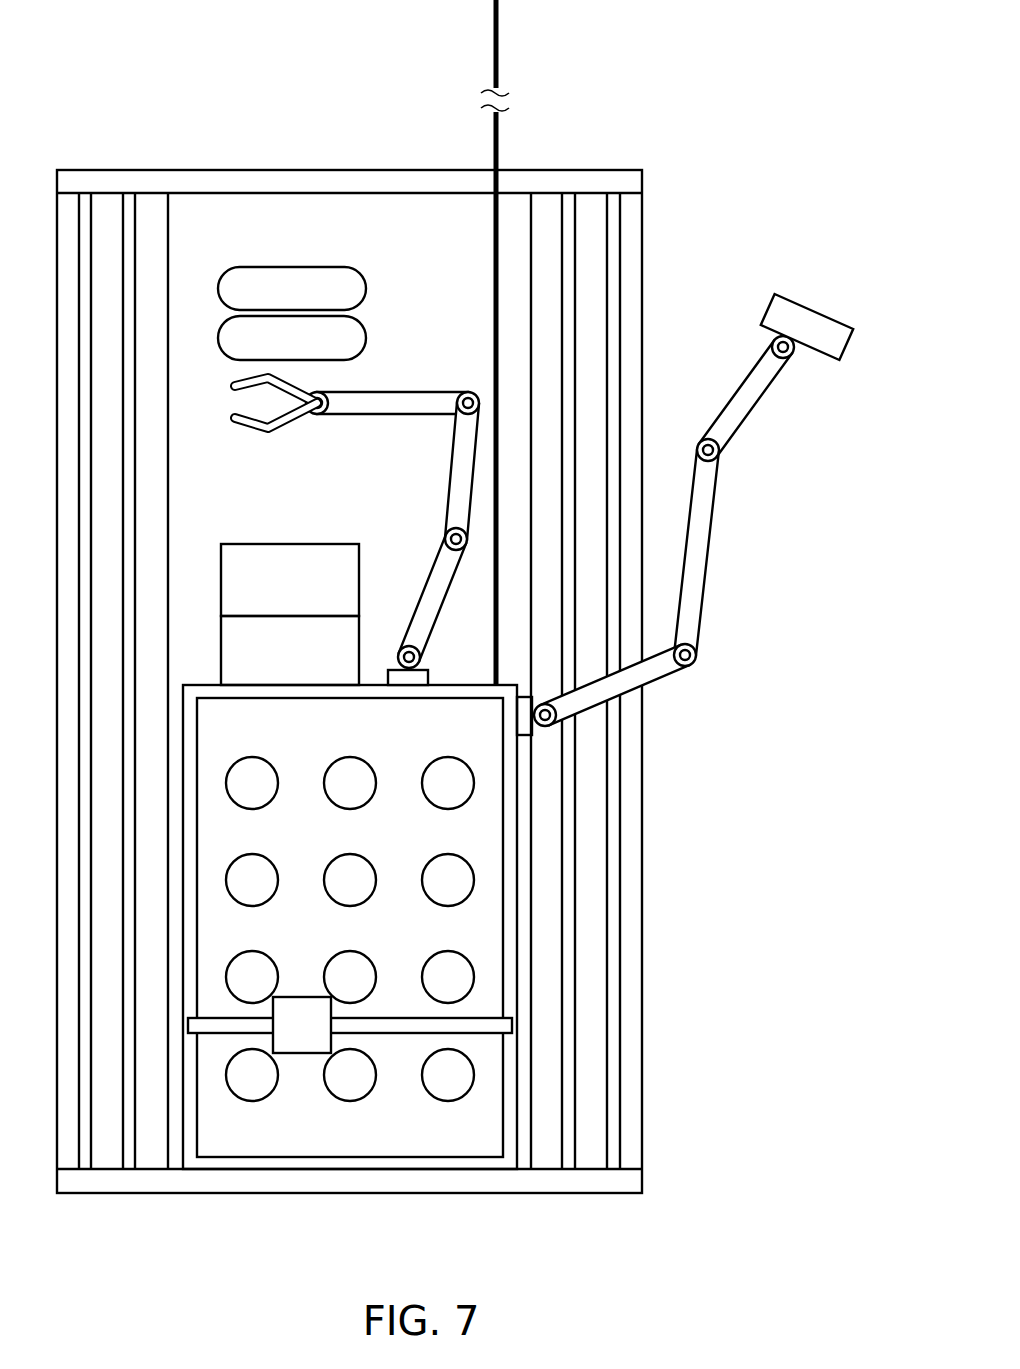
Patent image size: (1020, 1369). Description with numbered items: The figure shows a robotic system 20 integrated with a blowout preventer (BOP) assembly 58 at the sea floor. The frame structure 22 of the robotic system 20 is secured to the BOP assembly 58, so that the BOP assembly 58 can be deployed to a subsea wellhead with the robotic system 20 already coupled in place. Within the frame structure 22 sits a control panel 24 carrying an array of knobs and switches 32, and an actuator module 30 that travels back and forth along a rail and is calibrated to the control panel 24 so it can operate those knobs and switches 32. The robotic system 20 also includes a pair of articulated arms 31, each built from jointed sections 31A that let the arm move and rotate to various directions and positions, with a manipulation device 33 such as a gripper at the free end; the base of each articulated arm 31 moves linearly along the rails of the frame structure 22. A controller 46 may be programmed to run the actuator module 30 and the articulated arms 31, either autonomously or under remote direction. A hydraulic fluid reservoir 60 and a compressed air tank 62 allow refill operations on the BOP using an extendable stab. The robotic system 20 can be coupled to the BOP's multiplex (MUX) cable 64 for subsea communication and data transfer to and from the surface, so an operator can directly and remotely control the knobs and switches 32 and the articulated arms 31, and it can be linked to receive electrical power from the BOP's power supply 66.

The robotic system 20 is at (537, 752).
The frame structure 22 is at (453, 1163).
The control panel 24 is at (293, 1133).
The actuator module 30 is at (284, 1038).
The articulated arm 31 is at (460, 468).
The jointed section 31A is at (758, 405).
The knob or switch 32 is at (350, 1080).
The manipulation device 33 is at (285, 430).
The controller 46 is at (270, 664).
The BOP assembly 58 is at (597, 860).
The hydraulic fluid reservoir 60 is at (275, 302).
The compressed air tank 62 is at (275, 350).
The multiplex (MUX) cable 64 is at (491, 39).
The power supply 66 is at (270, 593).